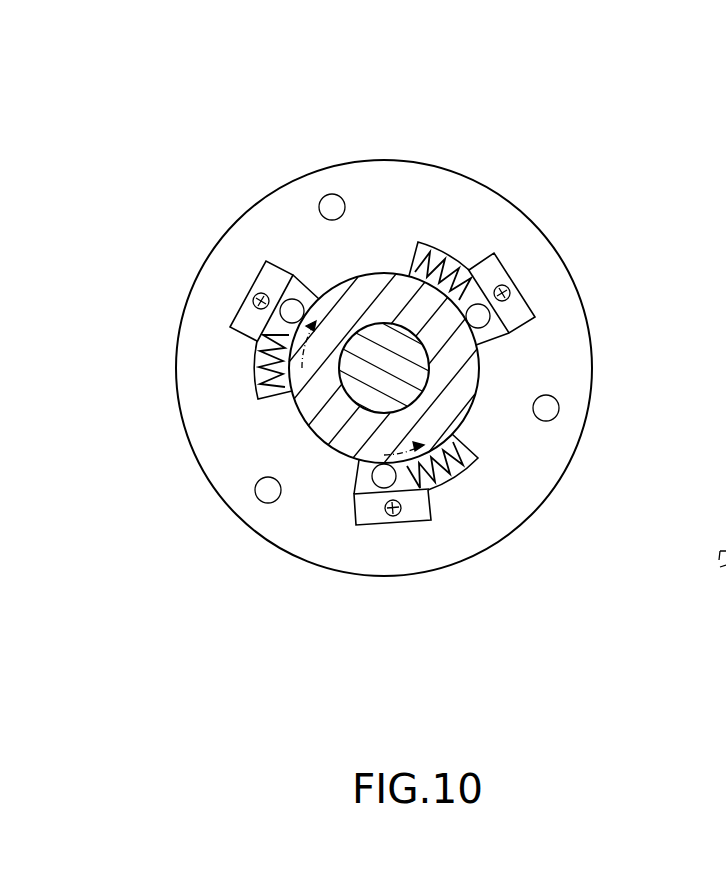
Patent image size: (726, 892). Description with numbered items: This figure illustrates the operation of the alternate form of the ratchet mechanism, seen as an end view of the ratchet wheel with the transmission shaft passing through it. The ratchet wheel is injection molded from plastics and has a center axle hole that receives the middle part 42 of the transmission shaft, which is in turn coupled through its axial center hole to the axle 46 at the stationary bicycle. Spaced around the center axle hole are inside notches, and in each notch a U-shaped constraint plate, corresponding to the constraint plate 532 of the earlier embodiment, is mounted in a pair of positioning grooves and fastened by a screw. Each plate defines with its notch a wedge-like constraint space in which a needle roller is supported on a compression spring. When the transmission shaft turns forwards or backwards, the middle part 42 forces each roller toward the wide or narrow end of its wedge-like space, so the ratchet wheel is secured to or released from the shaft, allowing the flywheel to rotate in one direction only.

The middle part 42 is at (453, 372).
The axle 46 is at (385, 343).
The constraint plate 532 is at (243, 318).